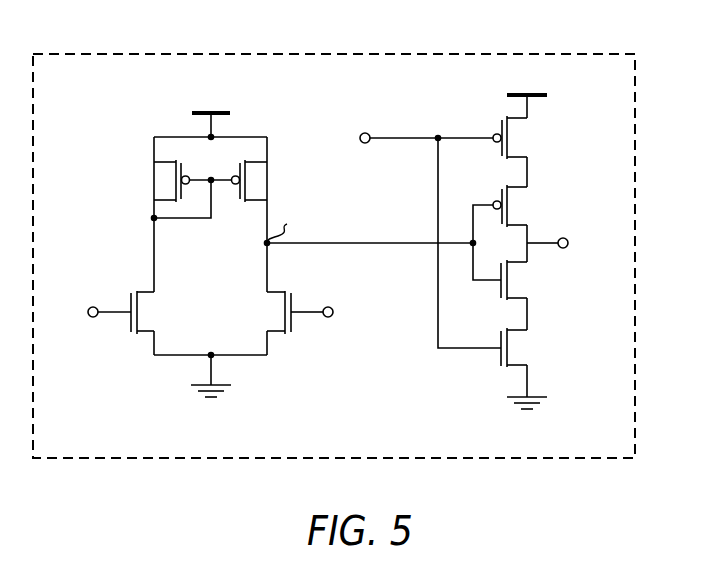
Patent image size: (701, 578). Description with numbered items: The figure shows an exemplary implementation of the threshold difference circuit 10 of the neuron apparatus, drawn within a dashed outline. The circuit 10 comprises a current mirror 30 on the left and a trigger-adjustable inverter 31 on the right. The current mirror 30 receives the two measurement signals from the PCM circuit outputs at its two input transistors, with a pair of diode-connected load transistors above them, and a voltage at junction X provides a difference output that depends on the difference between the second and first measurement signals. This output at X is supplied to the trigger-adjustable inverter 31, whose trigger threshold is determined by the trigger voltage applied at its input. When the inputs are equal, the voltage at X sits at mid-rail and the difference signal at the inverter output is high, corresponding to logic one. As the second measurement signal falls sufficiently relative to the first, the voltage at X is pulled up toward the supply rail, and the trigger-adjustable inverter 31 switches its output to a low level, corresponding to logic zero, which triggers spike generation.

The threshold difference circuit 10 is at (575, 53).
The current mirror 30 is at (127, 126).
The trigger-adjustable inverter 31 is at (566, 126).